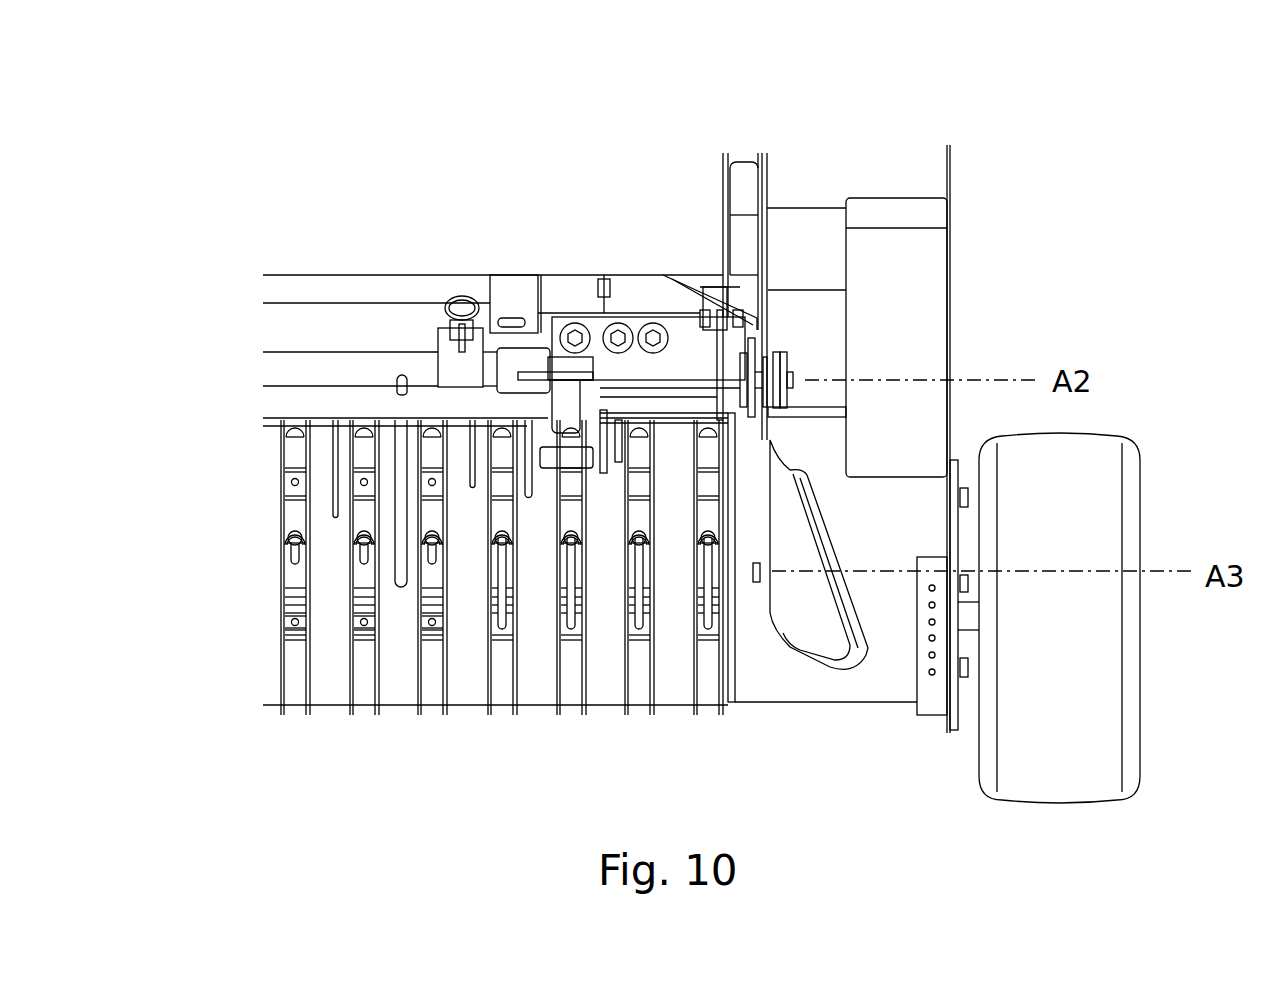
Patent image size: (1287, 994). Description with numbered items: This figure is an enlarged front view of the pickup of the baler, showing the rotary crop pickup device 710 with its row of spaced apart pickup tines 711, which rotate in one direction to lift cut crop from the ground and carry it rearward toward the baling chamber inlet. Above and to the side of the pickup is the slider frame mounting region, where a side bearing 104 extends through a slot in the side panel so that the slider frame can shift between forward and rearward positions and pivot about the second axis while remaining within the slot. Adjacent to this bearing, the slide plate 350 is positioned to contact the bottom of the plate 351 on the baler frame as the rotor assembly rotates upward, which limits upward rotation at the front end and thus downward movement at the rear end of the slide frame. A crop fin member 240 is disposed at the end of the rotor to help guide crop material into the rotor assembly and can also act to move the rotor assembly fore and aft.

The rotary crop pickup device 710 is at (245, 538).
The pickup tines 711 is at (505, 618).
The slide plate 350 is at (723, 303).
The plate on the baler frame 351 is at (740, 305).
The side bearing 104 is at (783, 357).
The crop fin member 240 is at (820, 635).